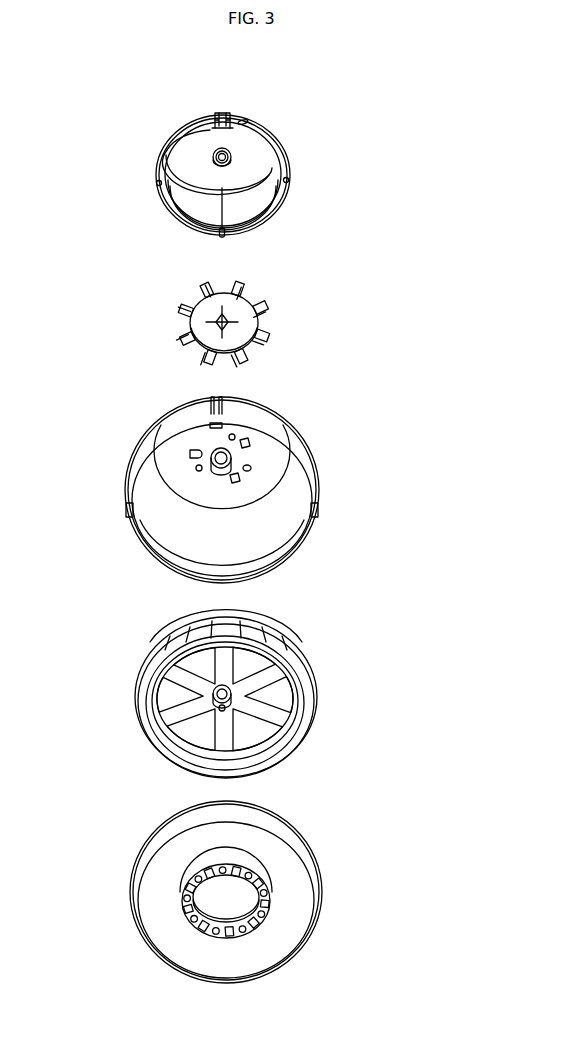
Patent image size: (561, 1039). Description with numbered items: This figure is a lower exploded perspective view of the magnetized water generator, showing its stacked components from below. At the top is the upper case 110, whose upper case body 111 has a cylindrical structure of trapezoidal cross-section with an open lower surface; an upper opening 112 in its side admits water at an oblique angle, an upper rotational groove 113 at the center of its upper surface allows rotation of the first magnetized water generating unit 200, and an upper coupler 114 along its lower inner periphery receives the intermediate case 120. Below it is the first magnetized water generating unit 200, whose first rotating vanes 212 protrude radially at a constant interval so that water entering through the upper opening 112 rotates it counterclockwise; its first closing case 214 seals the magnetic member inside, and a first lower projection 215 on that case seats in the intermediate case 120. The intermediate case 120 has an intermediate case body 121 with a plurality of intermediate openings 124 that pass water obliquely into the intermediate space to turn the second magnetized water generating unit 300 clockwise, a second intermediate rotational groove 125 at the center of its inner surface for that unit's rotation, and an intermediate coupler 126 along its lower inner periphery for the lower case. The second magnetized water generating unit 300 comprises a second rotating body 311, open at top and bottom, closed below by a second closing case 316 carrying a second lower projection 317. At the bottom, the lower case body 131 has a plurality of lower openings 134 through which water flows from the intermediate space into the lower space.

The upper case 110 is at (394, 102).
The upper case body 111 is at (268, 222).
The upper opening 112 is at (240, 120).
The upper rotational groove 113 is at (233, 162).
The upper coupler 114 is at (270, 203).
The first magnetized water generating unit 200 is at (173, 298).
The first rotating vanes 212 is at (262, 300).
The first closing case 214 is at (186, 345).
The first lower projection 215 is at (226, 326).
The intermediate case 120 is at (410, 427).
The intermediate case body 121 is at (224, 424).
The intermediate openings 124 is at (236, 438).
The second intermediate rotational groove 125 is at (226, 466).
The intermediate coupler 126 is at (282, 537).
The second magnetized water generating unit 300 is at (140, 646).
The second rotating body 311 is at (248, 623).
The second closing case 316 is at (302, 726).
The second lower projection 317 is at (212, 711).
The lower case body 131 is at (299, 841).
The lower openings 134 is at (195, 876).